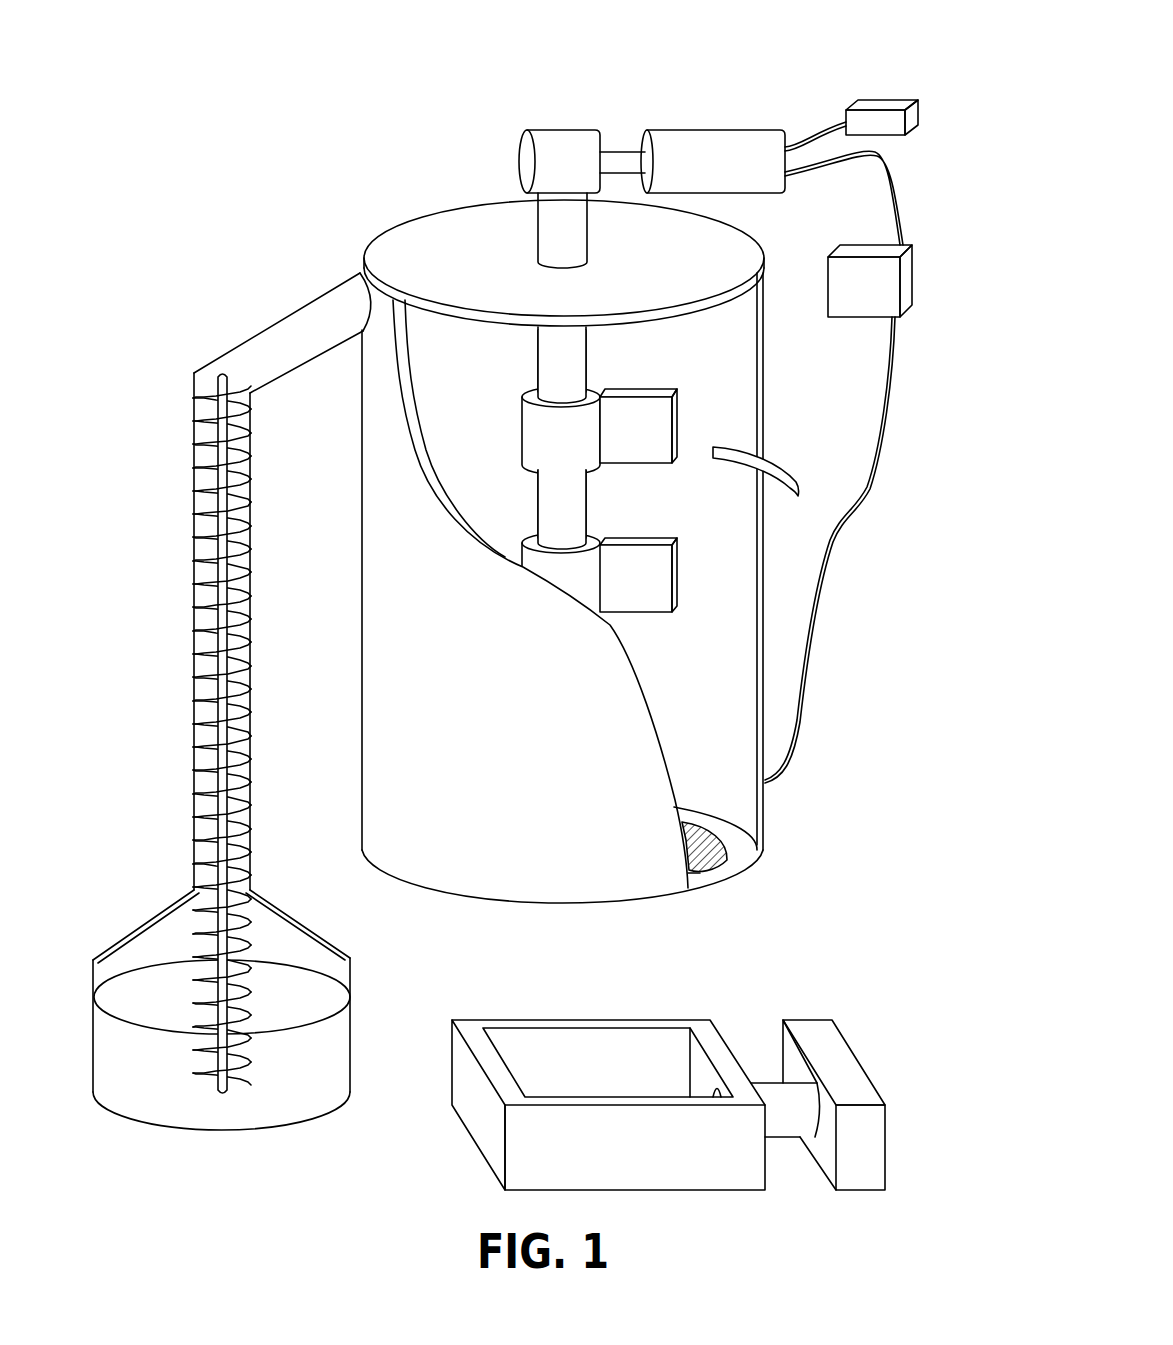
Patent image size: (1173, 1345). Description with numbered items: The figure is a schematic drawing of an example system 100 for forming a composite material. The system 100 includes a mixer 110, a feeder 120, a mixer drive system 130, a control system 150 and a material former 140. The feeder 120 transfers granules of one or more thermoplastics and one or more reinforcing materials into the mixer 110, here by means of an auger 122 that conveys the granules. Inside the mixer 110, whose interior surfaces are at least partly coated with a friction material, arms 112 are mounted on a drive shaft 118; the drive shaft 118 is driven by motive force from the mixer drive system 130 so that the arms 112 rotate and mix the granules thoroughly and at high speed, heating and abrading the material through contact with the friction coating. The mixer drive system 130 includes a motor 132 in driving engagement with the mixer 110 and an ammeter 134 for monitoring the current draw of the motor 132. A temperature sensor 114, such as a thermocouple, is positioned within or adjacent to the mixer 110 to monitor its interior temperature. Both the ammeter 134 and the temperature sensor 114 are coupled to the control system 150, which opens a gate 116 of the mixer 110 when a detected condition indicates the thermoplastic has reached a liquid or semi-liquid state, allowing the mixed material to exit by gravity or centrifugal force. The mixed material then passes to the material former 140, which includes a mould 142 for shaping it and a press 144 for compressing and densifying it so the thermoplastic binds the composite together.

The system 100 is at (370, 208).
The mixer 110 is at (765, 243).
The arms 112 is at (680, 417).
The temperature sensor 114 is at (797, 473).
The gate 116 is at (725, 855).
The drive shaft 118 is at (560, 227).
The feeder 120 is at (172, 494).
The auger 122 is at (244, 679).
The mixer drive system 130 is at (926, 47).
The motor 132 is at (677, 147).
The ammeter 134 is at (882, 120).
The material former 140 is at (700, 983).
The mould 142 is at (538, 1135).
The press 144 is at (843, 1073).
The control system 150 is at (882, 292).